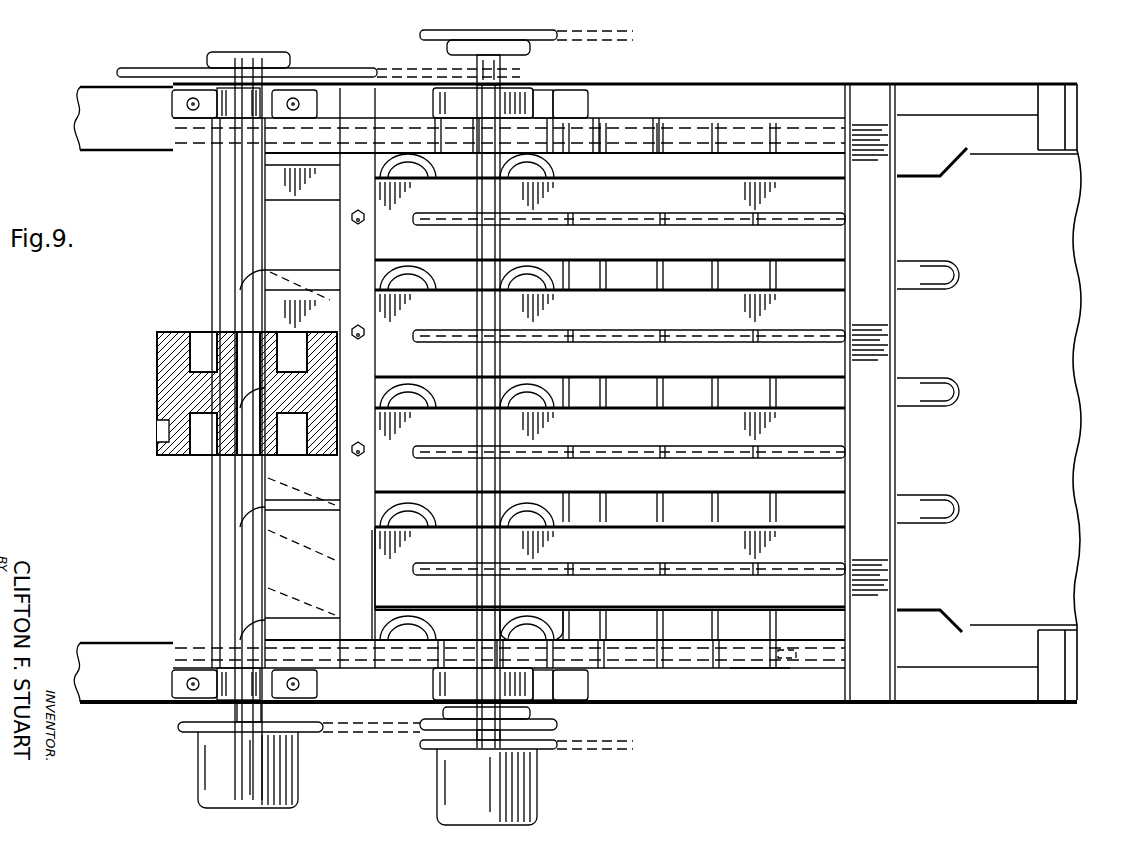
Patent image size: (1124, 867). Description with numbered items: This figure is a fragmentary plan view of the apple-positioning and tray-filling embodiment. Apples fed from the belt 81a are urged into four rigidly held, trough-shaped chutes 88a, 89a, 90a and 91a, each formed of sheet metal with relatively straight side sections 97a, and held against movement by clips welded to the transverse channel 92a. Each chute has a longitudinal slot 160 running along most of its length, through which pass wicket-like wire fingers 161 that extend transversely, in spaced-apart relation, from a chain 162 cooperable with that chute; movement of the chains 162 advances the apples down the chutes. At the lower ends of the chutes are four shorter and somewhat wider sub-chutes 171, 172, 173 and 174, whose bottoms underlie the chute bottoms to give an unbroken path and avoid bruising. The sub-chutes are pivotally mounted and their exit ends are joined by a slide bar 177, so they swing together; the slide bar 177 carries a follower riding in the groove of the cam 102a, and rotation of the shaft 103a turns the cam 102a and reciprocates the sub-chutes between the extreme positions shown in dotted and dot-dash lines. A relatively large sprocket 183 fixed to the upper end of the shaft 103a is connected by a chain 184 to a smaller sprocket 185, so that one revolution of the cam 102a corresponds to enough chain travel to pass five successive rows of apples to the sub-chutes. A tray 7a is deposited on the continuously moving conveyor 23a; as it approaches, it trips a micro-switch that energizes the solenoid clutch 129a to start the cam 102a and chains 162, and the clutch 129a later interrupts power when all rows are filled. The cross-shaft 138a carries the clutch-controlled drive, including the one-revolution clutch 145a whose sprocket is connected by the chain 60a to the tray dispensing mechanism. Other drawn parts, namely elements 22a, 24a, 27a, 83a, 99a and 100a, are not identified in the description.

The tray 7a is at (410, 623).
The frame beam 22a is at (126, 692).
The conveyor 23a is at (738, 662).
The cross bar 24a is at (792, 658).
The guide rod 27a is at (215, 617).
The chain 60a is at (622, 748).
The belt 81a is at (1060, 240).
The support plate 83a is at (1023, 155).
The chute 88a is at (830, 195).
The chute 89a is at (830, 312).
The chute 90a is at (830, 428).
The chute 91a is at (830, 548).
The transverse channel 92a is at (878, 597).
The side section 97a is at (523, 258).
The hook 99a is at (962, 273).
The deflector 100a is at (948, 170).
The cam 102a is at (170, 390).
The shaft 103a is at (247, 243).
The clutch 129a is at (212, 775).
The cross-shaft 138a is at (487, 592).
The clutch 145a is at (517, 782).
The longitudinal slot 160 is at (705, 216).
The wire finger 161 is at (667, 212).
The chain 162 is at (787, 216).
The sub-chute 171 is at (353, 220).
The sub-chute 172 is at (290, 293).
The sub-chute 173 is at (290, 468).
The sub-chute 174 is at (305, 578).
The slide bar 177 is at (348, 235).
The sprocket 183 is at (342, 70).
The chain 184 is at (393, 69).
The sprocket 185 is at (503, 72).